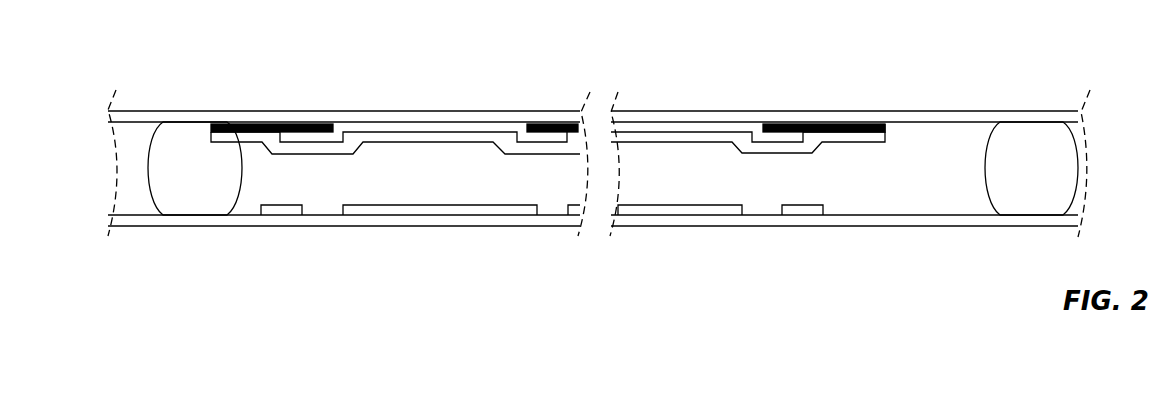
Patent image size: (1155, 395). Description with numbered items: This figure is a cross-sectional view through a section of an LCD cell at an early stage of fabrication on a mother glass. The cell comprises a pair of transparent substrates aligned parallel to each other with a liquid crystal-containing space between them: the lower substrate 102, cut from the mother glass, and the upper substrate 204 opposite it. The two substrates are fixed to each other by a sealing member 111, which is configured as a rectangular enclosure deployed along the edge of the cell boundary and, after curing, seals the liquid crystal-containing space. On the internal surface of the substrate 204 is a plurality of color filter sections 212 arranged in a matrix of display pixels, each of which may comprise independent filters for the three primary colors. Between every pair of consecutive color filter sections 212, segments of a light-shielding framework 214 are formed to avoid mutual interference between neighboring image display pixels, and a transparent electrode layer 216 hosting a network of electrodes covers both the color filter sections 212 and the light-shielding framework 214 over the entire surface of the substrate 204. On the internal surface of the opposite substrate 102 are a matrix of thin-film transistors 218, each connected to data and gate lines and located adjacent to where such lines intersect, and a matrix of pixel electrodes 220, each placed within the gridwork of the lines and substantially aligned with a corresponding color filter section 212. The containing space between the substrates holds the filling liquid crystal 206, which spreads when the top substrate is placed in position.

The substrate 102 is at (128, 228).
The sealing member 111 is at (170, 163).
The substrate 204 is at (148, 110).
The filling liquid crystal 206 is at (438, 181).
The color filter section 212 is at (403, 128).
The light-shielding framework 214 is at (307, 128).
The transparent electrode layer 216 is at (272, 143).
The thin-film transistor 218 is at (281, 209).
The pixel electrode 220 is at (403, 209).